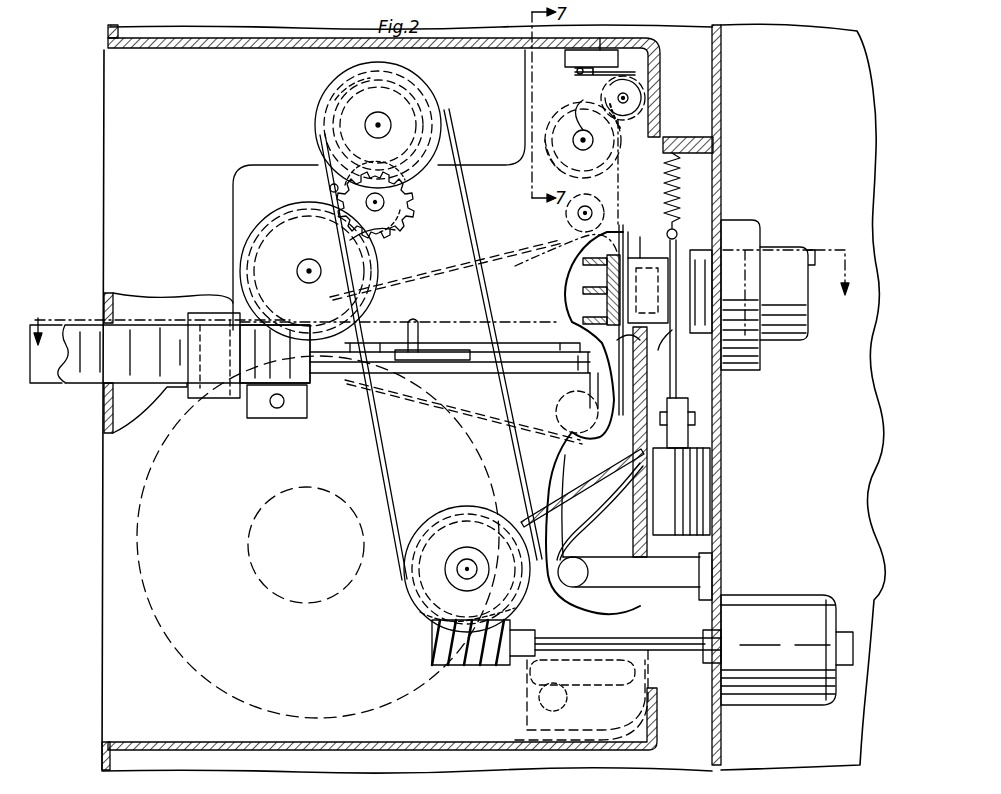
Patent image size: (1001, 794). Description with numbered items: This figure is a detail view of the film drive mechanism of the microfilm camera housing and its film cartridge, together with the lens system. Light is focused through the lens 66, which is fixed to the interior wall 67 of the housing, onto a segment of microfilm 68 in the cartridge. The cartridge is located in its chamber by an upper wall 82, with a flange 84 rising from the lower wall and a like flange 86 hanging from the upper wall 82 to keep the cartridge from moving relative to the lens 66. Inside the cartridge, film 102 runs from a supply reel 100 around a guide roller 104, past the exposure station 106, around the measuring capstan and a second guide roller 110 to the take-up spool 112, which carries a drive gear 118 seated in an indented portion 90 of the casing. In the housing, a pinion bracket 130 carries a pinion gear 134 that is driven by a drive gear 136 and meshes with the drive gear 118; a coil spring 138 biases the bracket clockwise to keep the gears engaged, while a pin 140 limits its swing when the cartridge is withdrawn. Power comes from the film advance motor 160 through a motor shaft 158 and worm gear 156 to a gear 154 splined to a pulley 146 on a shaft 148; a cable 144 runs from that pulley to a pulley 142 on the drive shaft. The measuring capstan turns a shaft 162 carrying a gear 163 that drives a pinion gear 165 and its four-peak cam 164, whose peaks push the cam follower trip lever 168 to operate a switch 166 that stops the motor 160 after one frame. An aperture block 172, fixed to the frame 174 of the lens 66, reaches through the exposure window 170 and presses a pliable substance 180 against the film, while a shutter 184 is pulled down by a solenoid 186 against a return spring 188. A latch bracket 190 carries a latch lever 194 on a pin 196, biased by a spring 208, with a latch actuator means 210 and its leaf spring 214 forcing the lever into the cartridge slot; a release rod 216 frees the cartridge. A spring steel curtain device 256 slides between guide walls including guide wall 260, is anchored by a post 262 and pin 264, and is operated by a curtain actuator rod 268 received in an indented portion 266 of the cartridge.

The lens 66 is at (820, 250).
The interior wall 67 is at (722, 545).
The segment of microfilm 68 is at (595, 275).
The upper wall 82 is at (590, 28).
The flange 84 is at (660, 725).
The flange 86 is at (645, 78).
The indented portion 90 is at (407, 399).
The supply reel 100 is at (192, 670).
The film 102 is at (556, 246).
The guide roller 104 is at (556, 442).
The exposure station 106 is at (612, 335).
The guide roller 110 is at (566, 216).
The take-up spool 112 is at (245, 212).
The drive gear 118 is at (395, 238).
The pinion bracket 130 is at (400, 221).
The pinion gear 134 is at (402, 206).
The drive gear 136 is at (404, 180).
The coil spring 138 is at (418, 101).
The pin 140 is at (333, 188).
The pulley 142 is at (328, 92).
The cable 144 is at (370, 450).
The pulley 146 is at (455, 512).
The shaft 148 is at (455, 572).
The gear 154 is at (425, 610).
The worm gear 156 is at (438, 665).
The motor shaft 158 is at (660, 650).
The film advance motor 160 is at (773, 595).
The shaft 162 is at (578, 112).
The gear 163 is at (545, 130).
The four-peak cam 164 is at (643, 96).
The pinion gear 165 is at (638, 116).
The switch 166 is at (615, 58).
The cam follower trip lever 168 is at (612, 80).
The exposure window 170 is at (660, 350).
The aperture block 172 is at (635, 232).
The frame 174 is at (748, 220).
The pliable substance 180 is at (672, 370).
The shutter 184 is at (690, 231).
The solenoid 186 is at (700, 445).
The return spring 188 is at (680, 195).
The latch bracket 190 is at (565, 400).
The latch lever 194 is at (307, 395).
The pin 196 is at (425, 395).
The spring 208 is at (414, 320).
The latch actuator means 210 is at (558, 348).
The leaf spring 214 is at (434, 342).
The release rod 216 is at (75, 385).
The curtain device 256 is at (600, 538).
The guide wall 260 is at (699, 582).
The post 262 is at (622, 672).
The pin 264 is at (570, 700).
The indented portion 266 is at (703, 618).
The curtain actuator rod 268 is at (585, 596).